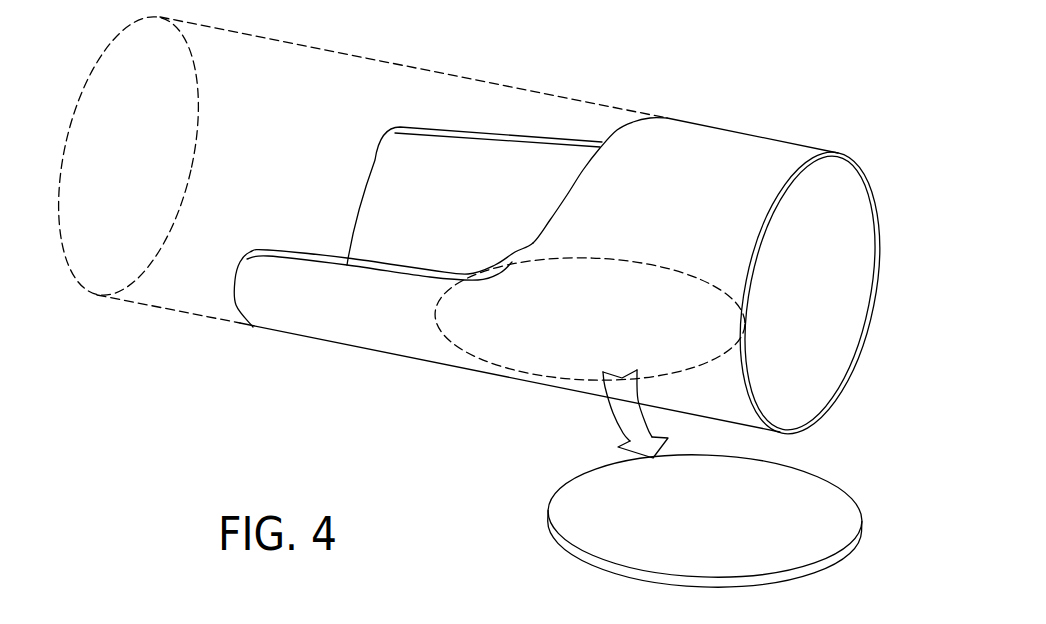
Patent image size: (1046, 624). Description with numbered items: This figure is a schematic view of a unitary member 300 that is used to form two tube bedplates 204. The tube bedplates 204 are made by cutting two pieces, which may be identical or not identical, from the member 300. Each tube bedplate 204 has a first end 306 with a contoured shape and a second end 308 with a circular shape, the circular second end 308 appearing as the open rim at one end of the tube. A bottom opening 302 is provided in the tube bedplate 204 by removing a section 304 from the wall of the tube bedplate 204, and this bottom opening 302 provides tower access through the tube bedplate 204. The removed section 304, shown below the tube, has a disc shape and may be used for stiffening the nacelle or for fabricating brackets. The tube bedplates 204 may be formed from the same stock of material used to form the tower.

The unitary member 300 is at (612, 54).
The tube bedplate 204 is at (445, 97).
The first end 306 is at (375, 160).
The second end 308 is at (878, 217).
The bottom opening 302 is at (492, 345).
The section 304 is at (577, 503).